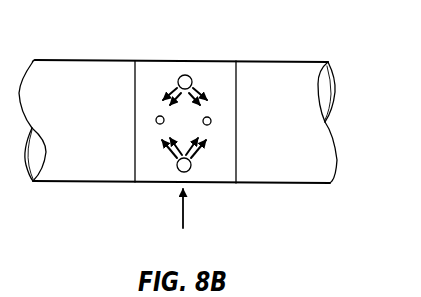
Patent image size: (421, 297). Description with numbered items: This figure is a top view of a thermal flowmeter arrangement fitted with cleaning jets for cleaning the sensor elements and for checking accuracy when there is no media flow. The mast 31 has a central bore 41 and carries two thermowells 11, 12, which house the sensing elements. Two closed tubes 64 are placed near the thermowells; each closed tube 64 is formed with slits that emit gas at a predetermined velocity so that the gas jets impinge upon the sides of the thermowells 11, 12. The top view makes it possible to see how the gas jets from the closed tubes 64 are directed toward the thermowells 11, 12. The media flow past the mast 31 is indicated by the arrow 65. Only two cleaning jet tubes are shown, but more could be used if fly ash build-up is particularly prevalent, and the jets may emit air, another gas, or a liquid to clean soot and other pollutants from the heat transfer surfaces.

The thermowell 11 is at (209, 117).
The thermowell 12 is at (158, 116).
The mast 31 is at (273, 61).
The central bore 41 is at (325, 88).
The closed tube 64 is at (185, 75).
The arrow 65 is at (185, 212).